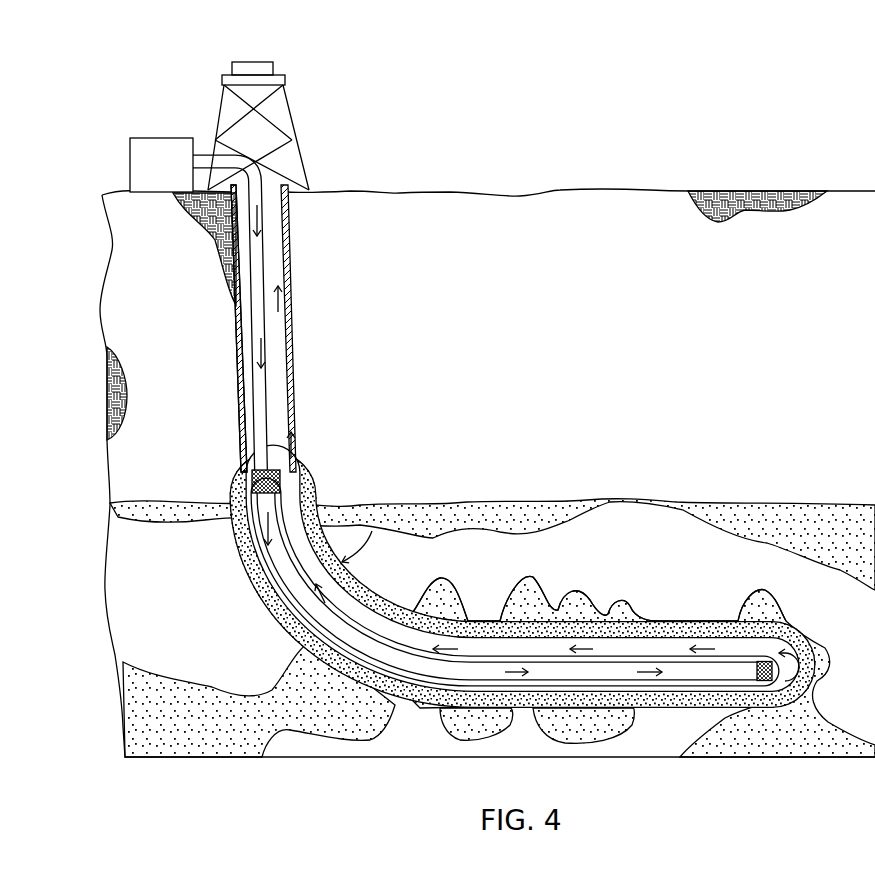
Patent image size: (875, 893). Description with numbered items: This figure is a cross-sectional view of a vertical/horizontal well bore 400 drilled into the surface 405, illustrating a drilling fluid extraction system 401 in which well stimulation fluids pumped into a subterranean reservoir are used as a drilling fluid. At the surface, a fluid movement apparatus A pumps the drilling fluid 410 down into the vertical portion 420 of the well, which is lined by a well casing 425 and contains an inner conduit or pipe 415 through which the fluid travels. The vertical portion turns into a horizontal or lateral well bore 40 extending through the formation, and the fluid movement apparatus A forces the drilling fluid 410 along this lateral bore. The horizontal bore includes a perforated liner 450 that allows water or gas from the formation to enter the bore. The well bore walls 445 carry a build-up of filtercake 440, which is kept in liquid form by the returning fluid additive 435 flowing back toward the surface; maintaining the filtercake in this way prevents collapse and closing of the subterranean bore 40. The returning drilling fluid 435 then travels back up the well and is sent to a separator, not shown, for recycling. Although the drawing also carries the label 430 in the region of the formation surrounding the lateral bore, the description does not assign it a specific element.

The vertical/horizontal well bore 400 is at (573, 86).
The fluid movement apparatus A is at (146, 150).
The surface 405 is at (343, 191).
The drilling fluid extraction system 401 is at (447, 318).
The horizontal or lateral well bore 40 is at (412, 462).
The vertical portion 420 is at (229, 356).
The well casing 425 is at (240, 413).
The drilling fluid 410 is at (270, 353).
The inner conduit or pipe 415 is at (272, 404).
The returning fluid additive 435 is at (283, 300).
The perforated liner 450 is at (255, 485).
The well bore walls 445 is at (293, 508).
The filtercake 440 is at (477, 614).
The formation 430 is at (606, 604).